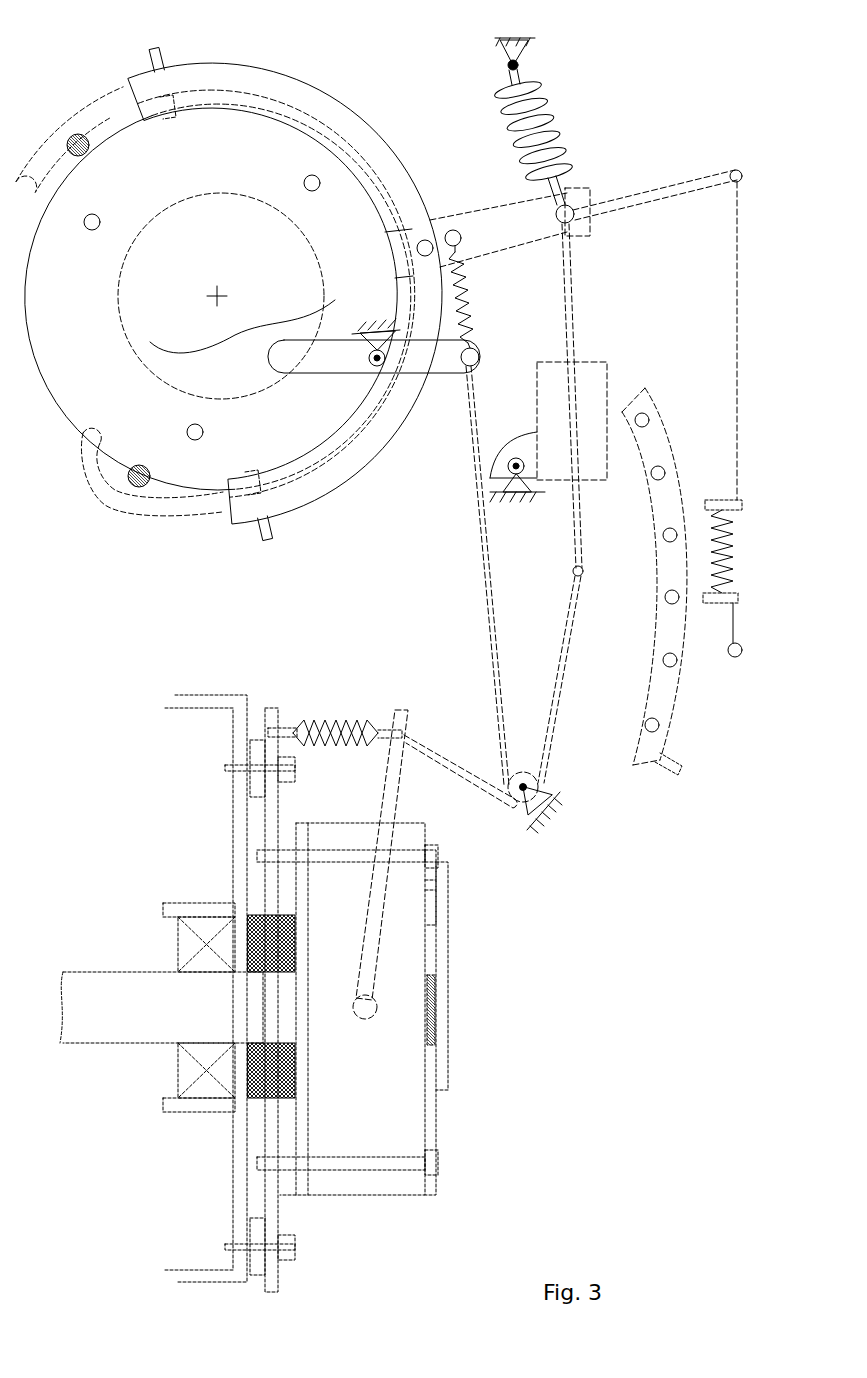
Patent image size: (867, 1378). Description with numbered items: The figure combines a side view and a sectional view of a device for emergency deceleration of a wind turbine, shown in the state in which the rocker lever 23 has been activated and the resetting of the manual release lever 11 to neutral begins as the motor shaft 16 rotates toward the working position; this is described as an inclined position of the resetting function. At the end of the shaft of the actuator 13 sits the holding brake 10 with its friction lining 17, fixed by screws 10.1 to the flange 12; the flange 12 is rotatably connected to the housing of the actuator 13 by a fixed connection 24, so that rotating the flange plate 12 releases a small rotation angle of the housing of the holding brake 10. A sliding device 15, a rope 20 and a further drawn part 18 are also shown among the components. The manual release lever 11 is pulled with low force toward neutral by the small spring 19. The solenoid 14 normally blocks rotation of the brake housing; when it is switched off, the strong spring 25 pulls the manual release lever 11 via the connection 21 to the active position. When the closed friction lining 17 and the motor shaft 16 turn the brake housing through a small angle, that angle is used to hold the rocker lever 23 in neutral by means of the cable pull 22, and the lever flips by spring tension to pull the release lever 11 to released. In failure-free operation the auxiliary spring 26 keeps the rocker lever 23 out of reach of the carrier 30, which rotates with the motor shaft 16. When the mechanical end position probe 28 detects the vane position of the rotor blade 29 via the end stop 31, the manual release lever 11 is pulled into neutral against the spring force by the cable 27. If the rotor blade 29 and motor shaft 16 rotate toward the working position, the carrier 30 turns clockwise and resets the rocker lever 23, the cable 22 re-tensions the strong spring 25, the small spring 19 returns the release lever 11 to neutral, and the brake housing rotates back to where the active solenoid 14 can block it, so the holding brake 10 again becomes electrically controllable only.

The holding brake 10 is at (363, 240).
The screws 10.1 is at (304, 182).
The manual release lever 11 is at (352, 123).
The flange 12 is at (510, 225).
The actuator 13 is at (240, 835).
The solenoid 14 is at (600, 370).
The sliding device 15 is at (715, 928).
The motor shaft 16 is at (110, 1030).
The friction lining 17 is at (260, 1100).
The support bar 18 is at (266, 708).
The small spring 19 is at (335, 718).
The rope 20 is at (445, 750).
The connection 21 is at (575, 568).
The cable pull 22 is at (483, 565).
The rocker lever 23 is at (340, 365).
The fixed connection 24 is at (82, 135).
The strong spring 25 is at (560, 135).
The auxiliary spring 26 is at (470, 270).
The cable 27 is at (735, 425).
The mechanical end position probe 28 is at (715, 500).
The rotor blade 29 is at (665, 735).
The carrier 30 is at (122, 290).
The end stop 31 is at (680, 785).